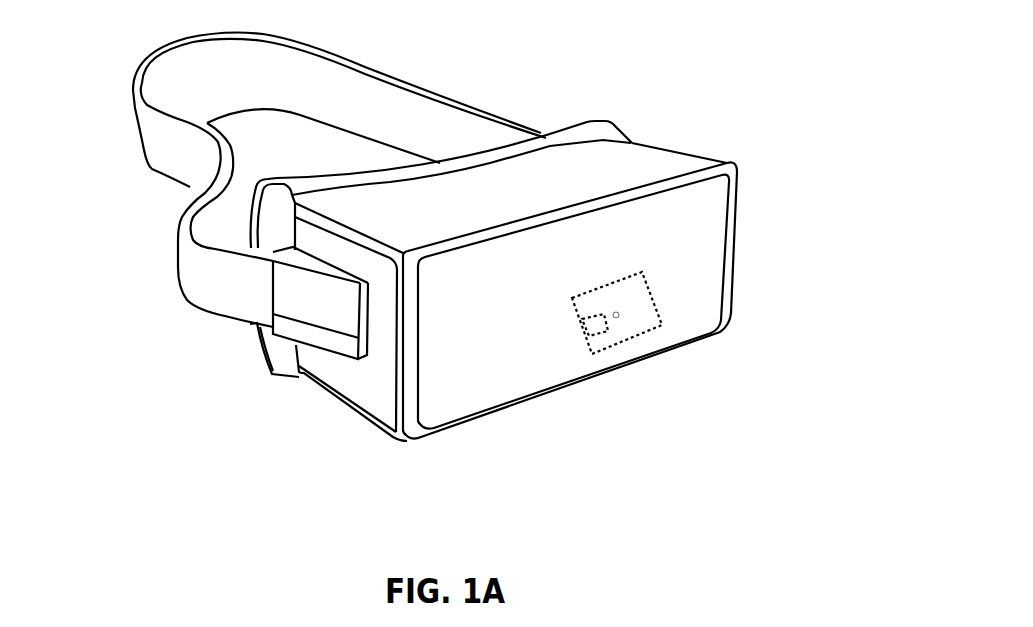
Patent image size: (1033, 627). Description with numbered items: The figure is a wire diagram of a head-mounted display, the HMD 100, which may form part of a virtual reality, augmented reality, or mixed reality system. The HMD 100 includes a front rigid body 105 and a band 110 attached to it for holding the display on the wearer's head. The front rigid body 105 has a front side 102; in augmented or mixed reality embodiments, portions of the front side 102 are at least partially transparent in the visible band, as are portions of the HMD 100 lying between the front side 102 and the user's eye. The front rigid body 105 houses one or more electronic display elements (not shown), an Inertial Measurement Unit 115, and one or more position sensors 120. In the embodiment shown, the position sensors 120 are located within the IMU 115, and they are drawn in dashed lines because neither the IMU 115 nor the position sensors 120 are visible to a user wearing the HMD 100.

The head-mounted display (HMD) 100 is at (32, 37).
The band 110 is at (443, 98).
The front rigid body 105 is at (745, 169).
The front side 102 is at (637, 222).
The Inertial Measurement Unit (IMU) 115 is at (662, 325).
The position sensors 120 is at (597, 326).